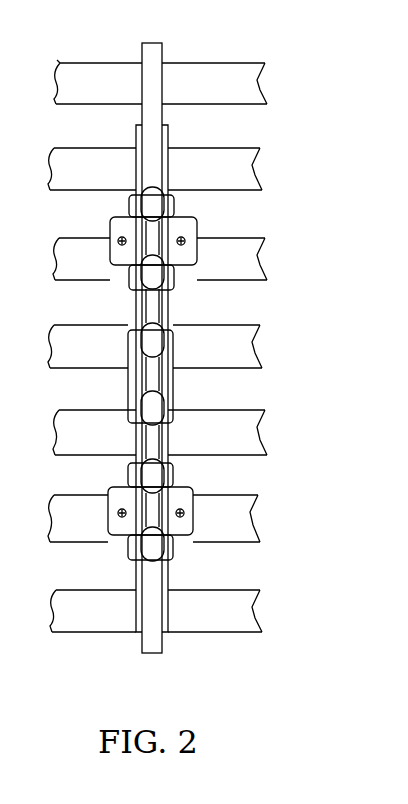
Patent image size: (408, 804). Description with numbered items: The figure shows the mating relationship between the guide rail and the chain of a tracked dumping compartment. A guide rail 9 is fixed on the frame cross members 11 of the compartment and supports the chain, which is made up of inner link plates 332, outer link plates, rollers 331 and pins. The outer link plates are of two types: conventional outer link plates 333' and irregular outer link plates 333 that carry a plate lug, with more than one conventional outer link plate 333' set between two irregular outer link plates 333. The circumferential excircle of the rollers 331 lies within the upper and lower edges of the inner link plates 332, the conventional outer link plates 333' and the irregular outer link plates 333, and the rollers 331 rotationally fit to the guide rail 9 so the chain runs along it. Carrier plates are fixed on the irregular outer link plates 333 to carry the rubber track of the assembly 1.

The structure 1 is at (157, 346).
The guide rail 9 is at (157, 58).
The frame cross member 11 is at (243, 258).
The roller 331 is at (170, 204).
The inner link plate 332 is at (170, 133).
The irregular outer link plate 333 is at (213, 511).
The conventional outer link plate 333' is at (220, 376).